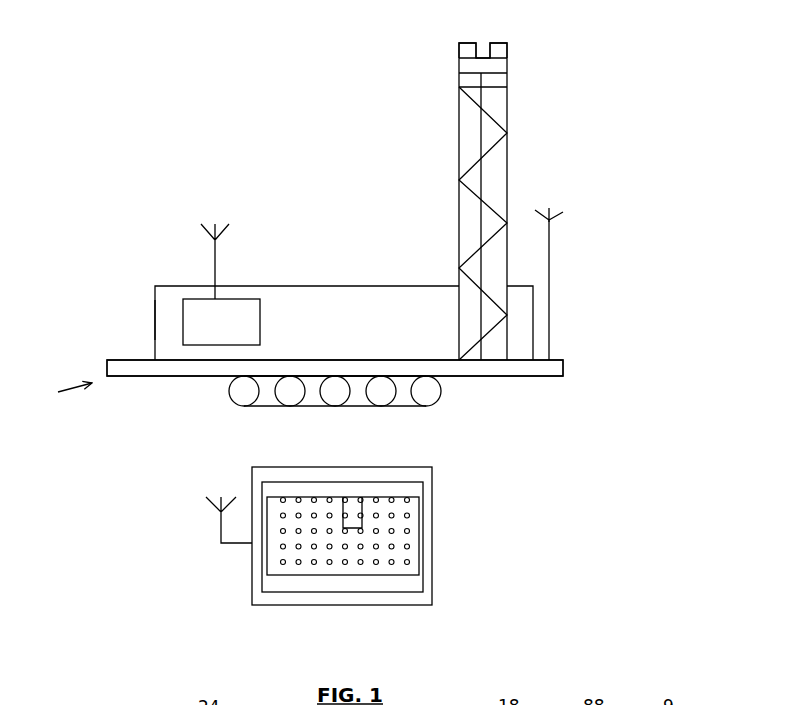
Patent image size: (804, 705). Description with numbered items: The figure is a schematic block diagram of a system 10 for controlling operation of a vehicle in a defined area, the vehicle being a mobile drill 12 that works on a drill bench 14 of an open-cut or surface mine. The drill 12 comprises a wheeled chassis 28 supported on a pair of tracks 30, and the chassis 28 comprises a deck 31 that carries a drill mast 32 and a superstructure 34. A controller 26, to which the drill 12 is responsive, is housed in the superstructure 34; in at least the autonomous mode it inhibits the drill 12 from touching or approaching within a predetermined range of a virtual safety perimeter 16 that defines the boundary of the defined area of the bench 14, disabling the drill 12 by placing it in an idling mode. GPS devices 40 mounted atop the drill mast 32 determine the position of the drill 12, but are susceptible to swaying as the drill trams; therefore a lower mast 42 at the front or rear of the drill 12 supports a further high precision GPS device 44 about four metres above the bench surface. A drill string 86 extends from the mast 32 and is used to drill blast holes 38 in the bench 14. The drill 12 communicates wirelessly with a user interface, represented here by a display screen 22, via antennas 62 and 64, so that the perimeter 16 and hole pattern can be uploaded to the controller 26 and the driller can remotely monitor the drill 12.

The system for controlling operation of a vehicle in a defined area 10 is at (637, 357).
The mobile drill 12 is at (311, 266).
The drill bench 14 is at (422, 566).
The virtual safety perimeter 16 is at (421, 508).
The display screen 22 is at (443, 548).
The controller 26 is at (232, 335).
The wheeled chassis 28 is at (58, 396).
The tracks 30 is at (230, 401).
The deck 31 is at (128, 377).
The drill mast 32 is at (508, 163).
The superstructure 34 is at (155, 312).
The blast holes 38 is at (283, 562).
The GPS devices 40 is at (474, 41).
The mast 42 is at (553, 268).
The high precision GPS device 44 is at (560, 213).
The antenna 62 is at (214, 262).
The antenna 64 is at (221, 527).
The drill string 86 is at (472, 240).